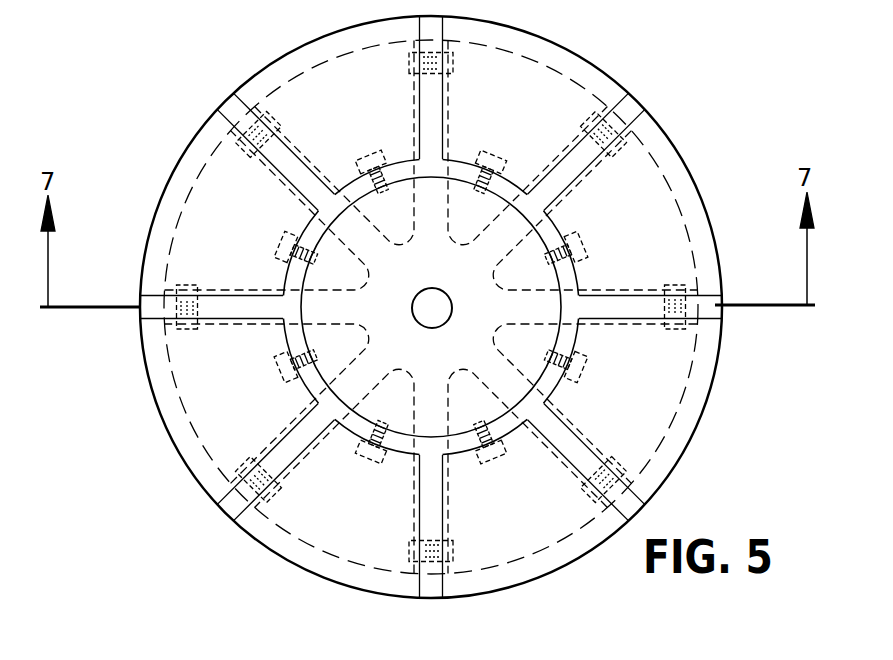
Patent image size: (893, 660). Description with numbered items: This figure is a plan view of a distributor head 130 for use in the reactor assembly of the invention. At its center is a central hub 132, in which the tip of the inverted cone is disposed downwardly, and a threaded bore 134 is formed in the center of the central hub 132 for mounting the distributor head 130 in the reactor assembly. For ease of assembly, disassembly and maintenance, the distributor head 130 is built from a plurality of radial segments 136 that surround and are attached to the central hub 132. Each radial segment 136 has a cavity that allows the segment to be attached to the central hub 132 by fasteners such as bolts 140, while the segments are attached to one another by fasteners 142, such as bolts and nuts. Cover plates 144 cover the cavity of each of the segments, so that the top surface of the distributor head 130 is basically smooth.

The distributor head 130 is at (215, 24).
The central hub 132 is at (404, 277).
The threaded bore 134 is at (434, 308).
The radial segment 136 is at (150, 212).
The bolt 140 is at (376, 158).
The fastener 142 is at (267, 119).
The cover plate 144 is at (218, 163).